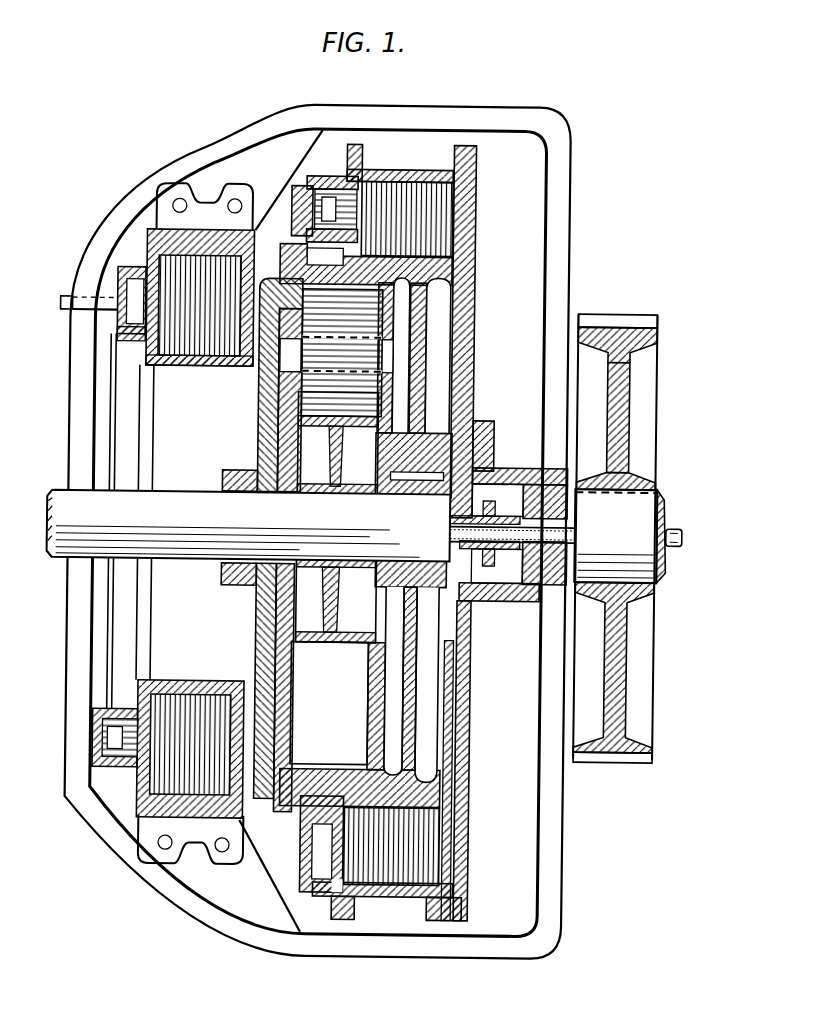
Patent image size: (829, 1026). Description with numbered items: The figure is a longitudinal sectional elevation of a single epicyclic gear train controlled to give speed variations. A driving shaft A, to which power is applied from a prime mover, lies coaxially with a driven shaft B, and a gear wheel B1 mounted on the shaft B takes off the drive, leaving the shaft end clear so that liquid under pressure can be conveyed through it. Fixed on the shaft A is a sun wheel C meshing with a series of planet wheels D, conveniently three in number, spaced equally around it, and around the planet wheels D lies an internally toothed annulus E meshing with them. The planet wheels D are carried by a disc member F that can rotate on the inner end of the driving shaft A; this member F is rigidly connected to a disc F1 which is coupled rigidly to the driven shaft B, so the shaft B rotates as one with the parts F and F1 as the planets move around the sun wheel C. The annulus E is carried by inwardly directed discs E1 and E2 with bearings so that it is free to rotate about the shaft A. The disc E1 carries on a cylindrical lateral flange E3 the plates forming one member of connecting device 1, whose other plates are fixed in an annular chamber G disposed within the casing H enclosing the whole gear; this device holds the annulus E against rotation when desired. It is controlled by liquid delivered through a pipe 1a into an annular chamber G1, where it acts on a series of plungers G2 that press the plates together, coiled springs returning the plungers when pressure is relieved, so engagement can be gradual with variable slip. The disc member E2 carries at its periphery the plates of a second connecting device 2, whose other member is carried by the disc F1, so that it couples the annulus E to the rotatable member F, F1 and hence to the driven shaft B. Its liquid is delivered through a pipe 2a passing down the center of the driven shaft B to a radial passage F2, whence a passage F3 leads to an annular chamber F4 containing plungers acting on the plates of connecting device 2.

The casing H is at (216, 138).
The annular chamber G is at (192, 247).
The annular chamber G1 is at (52, 782).
The plungers G2 is at (95, 722).
The connecting device 1 is at (180, 296).
The pipe 1a is at (68, 312).
The cylindrical part or lateral flange E3 is at (197, 368).
The connecting device 2 is at (408, 187).
The pipe 2a is at (670, 527).
The planet wheels D is at (392, 300).
The disc member F is at (388, 390).
The disc F1 is at (463, 853).
The radial passage F2 is at (452, 820).
The passage F3 is at (387, 897).
The annular chamber F4 is at (318, 853).
The internally toothed annulus E is at (325, 765).
The inwardly directed flange or disc E1 is at (255, 645).
The disc member E2 is at (413, 753).
The sun wheel C is at (312, 628).
The driving shaft A is at (97, 523).
The driven shaft B is at (657, 488).
The gear wheel B1 is at (656, 353).